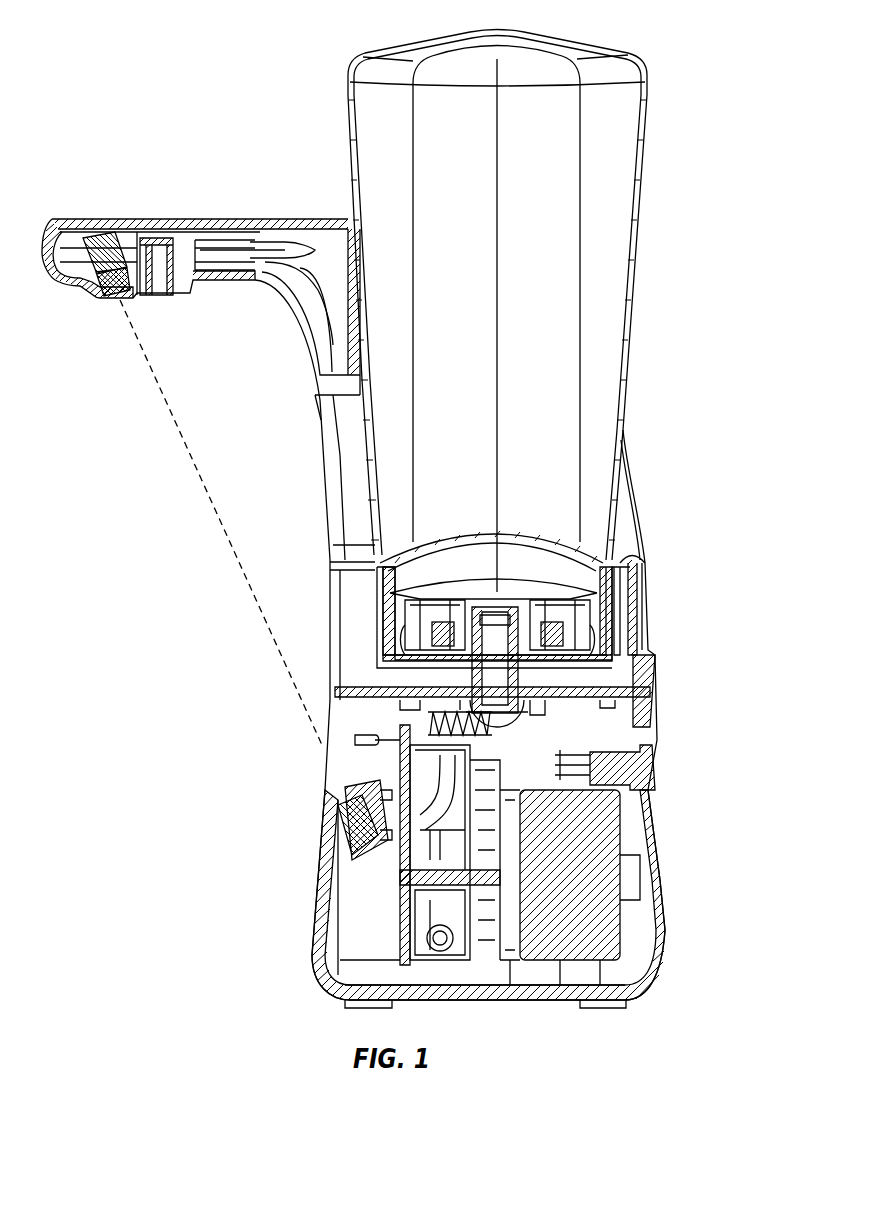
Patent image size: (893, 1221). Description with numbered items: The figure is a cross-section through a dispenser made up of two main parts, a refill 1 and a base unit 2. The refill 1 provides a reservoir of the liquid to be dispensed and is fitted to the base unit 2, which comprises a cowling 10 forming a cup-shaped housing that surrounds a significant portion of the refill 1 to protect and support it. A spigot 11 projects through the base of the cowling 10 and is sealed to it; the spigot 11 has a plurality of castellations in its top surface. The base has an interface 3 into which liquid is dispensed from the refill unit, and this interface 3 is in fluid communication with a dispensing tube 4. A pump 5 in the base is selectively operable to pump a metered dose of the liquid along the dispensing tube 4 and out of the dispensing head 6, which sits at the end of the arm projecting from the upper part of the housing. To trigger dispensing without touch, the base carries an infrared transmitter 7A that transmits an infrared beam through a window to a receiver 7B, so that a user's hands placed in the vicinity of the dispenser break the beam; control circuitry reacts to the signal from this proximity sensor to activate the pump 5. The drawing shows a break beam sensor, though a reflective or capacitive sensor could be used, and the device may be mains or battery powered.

The refill 1 is at (548, 246).
The base unit 2 is at (703, 821).
The interface 3 is at (655, 768).
The dispensing tube 4 is at (420, 838).
The pump 5 is at (605, 930).
The dispensing head 6 is at (158, 292).
The infrared transmitter 7A is at (75, 281).
The receiver 7B is at (342, 833).
The cowling 10 is at (328, 460).
The spigot 11 is at (585, 650).